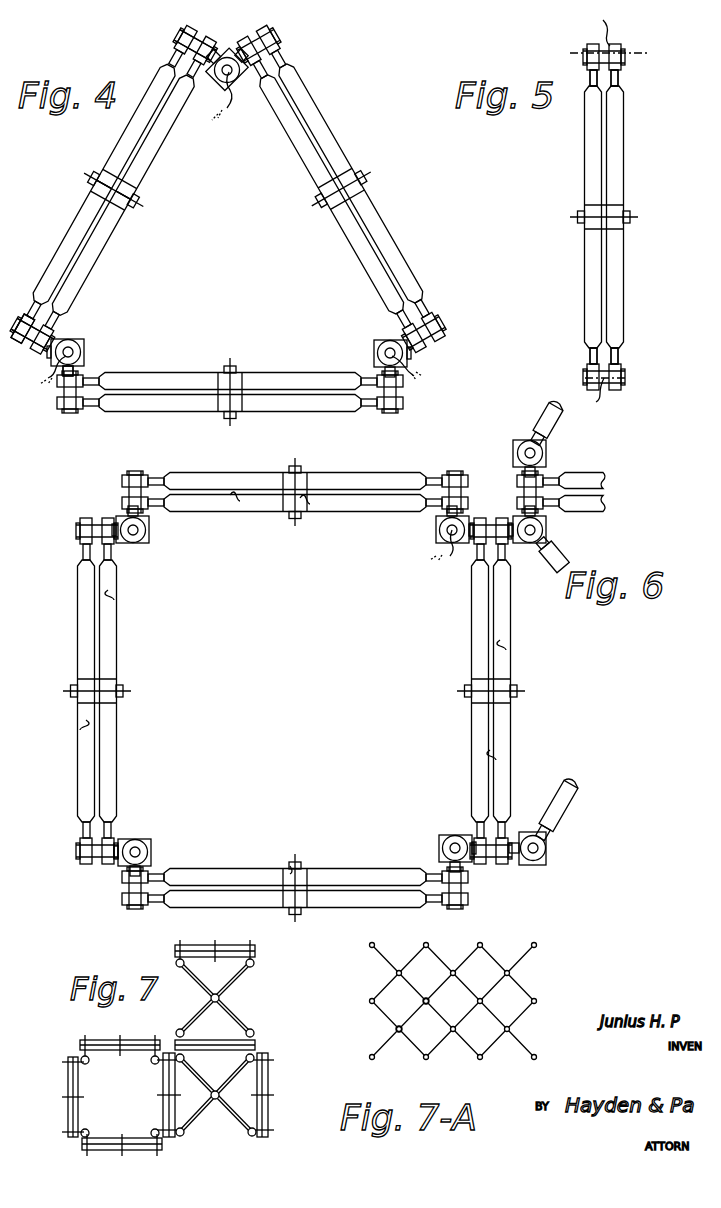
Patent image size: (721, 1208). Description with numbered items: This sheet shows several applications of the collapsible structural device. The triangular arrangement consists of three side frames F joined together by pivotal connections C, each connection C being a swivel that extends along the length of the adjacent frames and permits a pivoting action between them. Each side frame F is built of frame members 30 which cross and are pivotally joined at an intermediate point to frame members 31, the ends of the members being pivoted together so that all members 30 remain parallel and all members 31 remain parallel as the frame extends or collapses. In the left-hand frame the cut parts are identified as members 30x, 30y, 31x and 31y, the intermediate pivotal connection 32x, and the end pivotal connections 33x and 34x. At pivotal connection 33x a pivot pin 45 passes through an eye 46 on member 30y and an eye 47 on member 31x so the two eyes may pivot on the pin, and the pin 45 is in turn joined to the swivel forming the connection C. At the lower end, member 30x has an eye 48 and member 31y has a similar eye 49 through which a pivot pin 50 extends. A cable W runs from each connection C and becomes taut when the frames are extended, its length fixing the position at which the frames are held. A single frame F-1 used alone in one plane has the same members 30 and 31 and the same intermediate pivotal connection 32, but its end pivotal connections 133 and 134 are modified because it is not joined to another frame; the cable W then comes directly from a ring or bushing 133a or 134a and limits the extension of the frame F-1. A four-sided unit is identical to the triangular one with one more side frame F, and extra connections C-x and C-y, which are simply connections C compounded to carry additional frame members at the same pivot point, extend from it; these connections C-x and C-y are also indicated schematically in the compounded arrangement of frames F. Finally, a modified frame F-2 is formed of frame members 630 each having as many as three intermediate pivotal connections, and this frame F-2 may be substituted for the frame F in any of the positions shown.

In FIG. 4, the pivotal connection 33x is at (200, 42).
In FIG. 4, the eye 47 is at (175, 52).
In FIG. 4, the pivot pin 45 is at (220, 69).
In FIG. 4, the eye 46 is at (211, 79).
In FIG. 4, the pivotal connection C is at (213, 209).
In FIG. 6, the pivotal connection C is at (135, 542).
In FIG. 4, the cable W is at (228, 114).
In FIG. 5, the cable W is at (596, 36).
In FIG. 4, the frame member 31x is at (121, 148).
In FIG. 4, the frame member 30y is at (157, 152).
In FIG. 4, the pivotal connection 32x is at (133, 205).
In FIG. 4, the side frame F is at (67, 232).
In FIG. 6, the side frame F is at (308, 504).
In FIG. 7, the side frame F is at (98, 1040).
In FIG. 4, the frame member 31y is at (53, 256).
In FIG. 4, the frame member 30x is at (84, 284).
In FIG. 4, the eye 49 is at (37, 309).
In FIG. 4, the eye 48 is at (59, 330).
In FIG. 4, the pivotal connection 34x is at (30, 340).
In FIG. 4, the pivot pin 50 is at (58, 374).
In FIG. 5, the pivotal connection 133 is at (617, 43).
In FIG. 5, the ring or bushing 133a is at (615, 65).
In FIG. 5, the frame F-1 is at (609, 218).
In FIG. 5, the pivotal connection 32 is at (626, 217).
In FIG. 5, the frame member 31 is at (588, 262).
In FIG. 5, the frame member 30 is at (617, 268).
In FIG. 5, the ring or bushing 134a is at (617, 365).
In FIG. 5, the pivotal connection 134 is at (614, 400).
In FIG. 6, the extra connection C-y is at (514, 459).
In FIG. 7, the extra connection C-y is at (178, 1030).
In FIG. 6, the extra connection C-x is at (547, 858).
In FIG. 7, the extra connection C-x is at (181, 1134).
In FIG. 7A, the frame member 630 is at (404, 1023).
In FIG. 7A, the frame F-2 is at (524, 981).